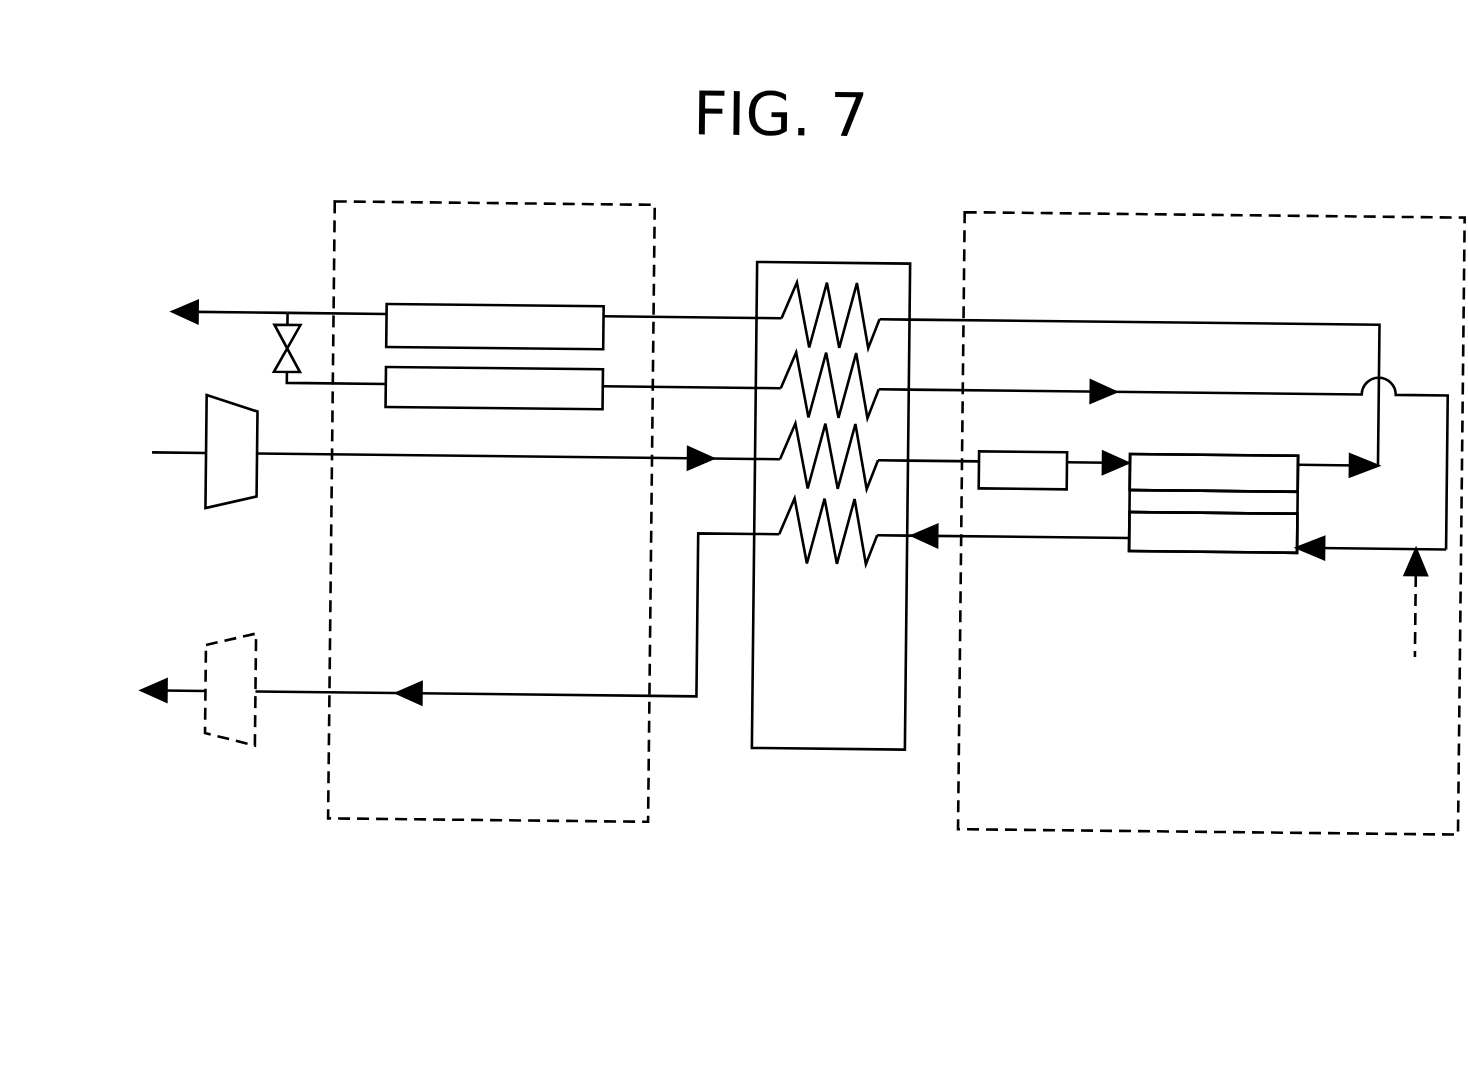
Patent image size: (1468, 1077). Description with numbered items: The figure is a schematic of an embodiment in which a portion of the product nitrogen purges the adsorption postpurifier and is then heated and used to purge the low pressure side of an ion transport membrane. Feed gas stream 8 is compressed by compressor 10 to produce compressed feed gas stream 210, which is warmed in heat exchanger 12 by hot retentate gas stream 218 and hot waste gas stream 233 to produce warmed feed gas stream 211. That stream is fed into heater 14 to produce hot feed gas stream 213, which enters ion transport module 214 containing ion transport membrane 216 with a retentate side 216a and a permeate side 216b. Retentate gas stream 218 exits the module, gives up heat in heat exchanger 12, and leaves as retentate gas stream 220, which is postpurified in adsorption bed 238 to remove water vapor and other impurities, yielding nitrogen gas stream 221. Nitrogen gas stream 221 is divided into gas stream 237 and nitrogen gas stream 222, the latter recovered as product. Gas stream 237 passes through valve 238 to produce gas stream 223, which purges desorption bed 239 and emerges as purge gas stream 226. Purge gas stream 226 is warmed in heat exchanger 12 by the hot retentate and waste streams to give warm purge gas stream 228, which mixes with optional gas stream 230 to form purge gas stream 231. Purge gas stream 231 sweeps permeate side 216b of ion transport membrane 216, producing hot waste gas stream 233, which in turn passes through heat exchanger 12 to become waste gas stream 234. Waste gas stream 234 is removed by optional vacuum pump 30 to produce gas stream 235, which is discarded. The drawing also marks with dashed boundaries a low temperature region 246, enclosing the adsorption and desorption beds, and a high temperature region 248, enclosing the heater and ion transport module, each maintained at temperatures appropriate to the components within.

The feed gas stream 8 is at (177, 459).
The compressor 10 is at (250, 503).
The heat exchanger 12 is at (847, 748).
The heater 14 is at (1058, 486).
The vacuum pump 30 is at (268, 752).
The compressed feed gas stream 210 is at (560, 459).
The warmed feed gas stream 211 is at (935, 461).
The hot feed gas stream 213 is at (1083, 456).
The ion transport module 214 is at (1159, 548).
The ion transport membrane 216 is at (1127, 498).
The retentate side 216a is at (1167, 486).
The permeate side 216b is at (1248, 510).
The retentate gas stream 218 is at (1112, 318).
The retentate gas stream 220 is at (627, 318).
The nitrogen gas stream 221 is at (313, 318).
The nitrogen gas stream 222 is at (281, 273).
The gas stream 223 is at (307, 395).
The purge gas stream 226 is at (625, 388).
The warm purge gas stream 228 is at (1213, 387).
The gas stream 230 is at (1415, 620).
The purge gas stream 231 is at (1418, 507).
The hot waste gas stream 233 is at (1068, 535).
The waste gas stream 234 is at (535, 692).
The gas stream 235 is at (190, 694).
The gas stream 237 is at (281, 322).
The adsorption bed and valve 238 is at (437, 308).
The desorption bed 239 is at (477, 411).
The low temperature region 246 is at (606, 824).
The high temperature region 248 is at (1440, 834).